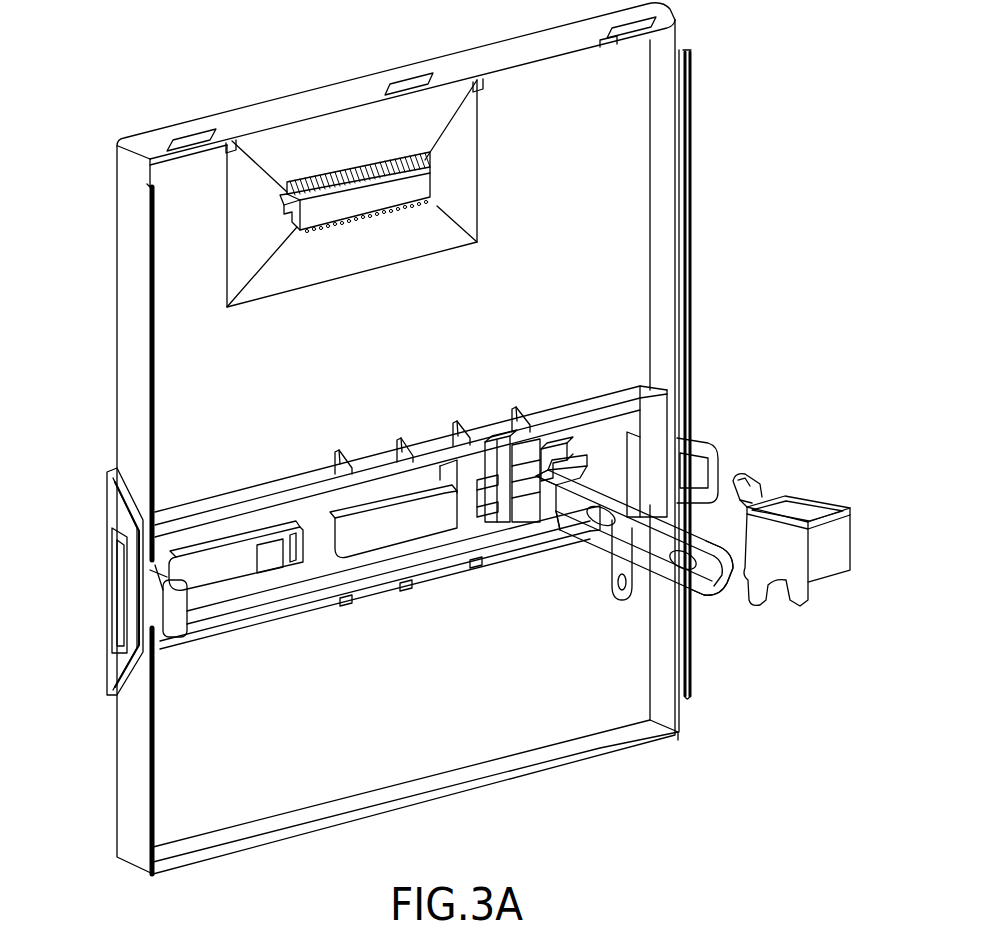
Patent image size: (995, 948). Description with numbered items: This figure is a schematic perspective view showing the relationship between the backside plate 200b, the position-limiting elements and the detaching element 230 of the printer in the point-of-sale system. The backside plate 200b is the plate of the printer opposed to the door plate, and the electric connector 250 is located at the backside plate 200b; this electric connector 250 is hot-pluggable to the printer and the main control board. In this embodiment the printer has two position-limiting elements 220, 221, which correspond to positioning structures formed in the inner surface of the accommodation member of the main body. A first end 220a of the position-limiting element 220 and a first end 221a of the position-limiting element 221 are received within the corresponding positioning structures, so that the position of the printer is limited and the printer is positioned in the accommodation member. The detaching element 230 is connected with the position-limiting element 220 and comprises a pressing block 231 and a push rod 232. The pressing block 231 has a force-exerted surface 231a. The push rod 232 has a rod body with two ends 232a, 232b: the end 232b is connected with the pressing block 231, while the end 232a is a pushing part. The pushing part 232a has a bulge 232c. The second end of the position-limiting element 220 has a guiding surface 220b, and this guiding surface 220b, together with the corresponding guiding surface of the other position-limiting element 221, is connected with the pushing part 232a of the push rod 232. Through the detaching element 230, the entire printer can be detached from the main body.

The backside plate 200b is at (325, 85).
The electric connector 250 is at (378, 198).
The position-limiting element 220 is at (655, 430).
The first end of the position-limiting element 220a is at (692, 448).
The guiding surface 220b is at (497, 492).
The position-limiting element 221 is at (283, 586).
The first end of the position-limiting element 221a is at (108, 636).
The detaching element 230 is at (776, 678).
The pressing block 231 is at (822, 563).
The force-exerted surface 231a is at (806, 506).
The push rod 232 is at (620, 580).
The pushing part 232a is at (560, 484).
The end of the push rod 232b is at (725, 580).
The bulge 232c is at (556, 460).